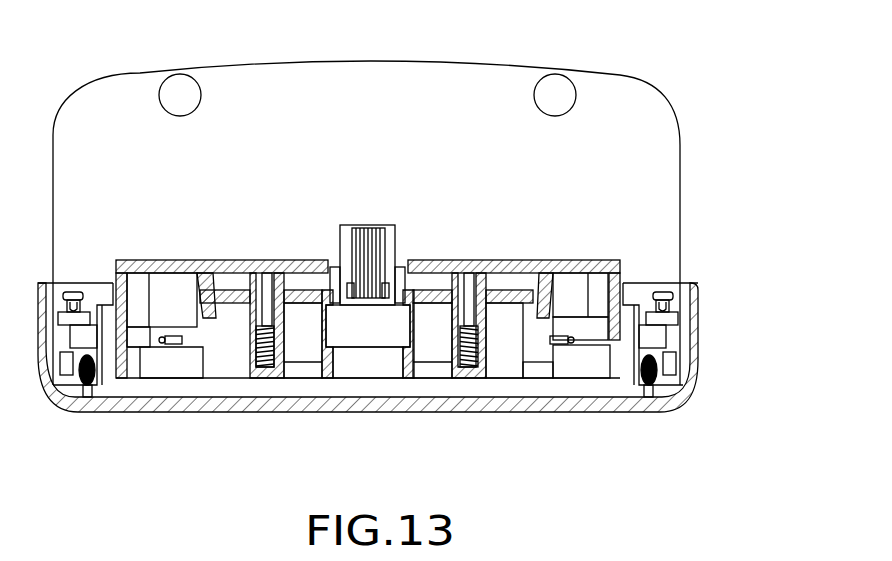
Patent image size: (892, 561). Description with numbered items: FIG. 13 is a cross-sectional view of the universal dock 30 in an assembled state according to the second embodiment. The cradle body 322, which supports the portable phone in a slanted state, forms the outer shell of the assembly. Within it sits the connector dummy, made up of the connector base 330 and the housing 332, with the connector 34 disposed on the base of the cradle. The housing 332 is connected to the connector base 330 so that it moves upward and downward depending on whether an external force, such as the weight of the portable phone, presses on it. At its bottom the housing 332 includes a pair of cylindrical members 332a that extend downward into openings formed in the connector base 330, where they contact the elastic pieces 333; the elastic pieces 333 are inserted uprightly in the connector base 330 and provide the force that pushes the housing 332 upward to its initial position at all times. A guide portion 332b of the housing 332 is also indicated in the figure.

The universal dock 30 is at (385, 38).
The cradle body 322 is at (665, 147).
The housing 332 is at (209, 303).
The cylindrical members 332a is at (298, 286).
The guide portion 332b is at (207, 318).
The elastic pieces 333 is at (262, 370).
The connector base 330 is at (370, 360).
The connector 34 is at (363, 225).